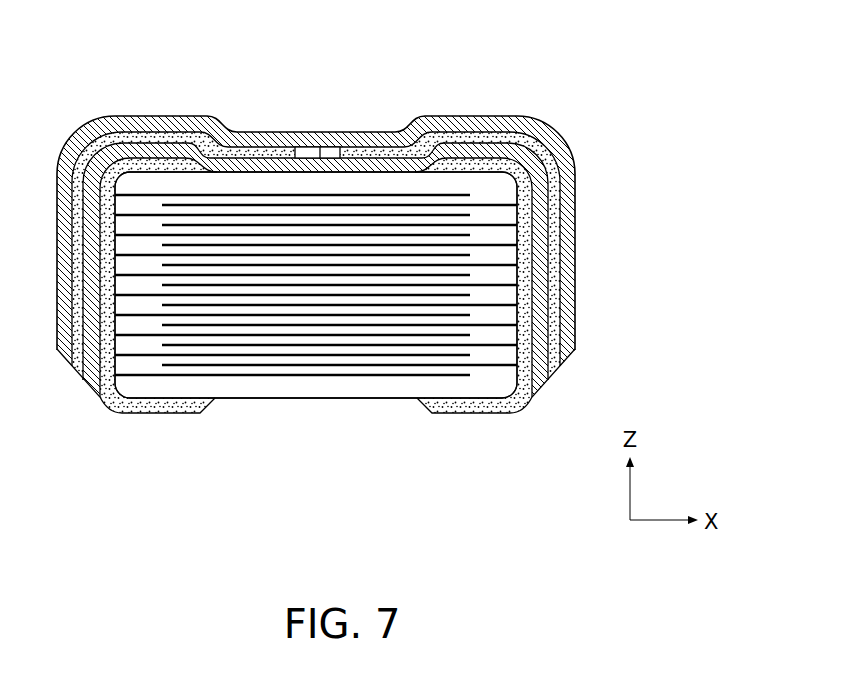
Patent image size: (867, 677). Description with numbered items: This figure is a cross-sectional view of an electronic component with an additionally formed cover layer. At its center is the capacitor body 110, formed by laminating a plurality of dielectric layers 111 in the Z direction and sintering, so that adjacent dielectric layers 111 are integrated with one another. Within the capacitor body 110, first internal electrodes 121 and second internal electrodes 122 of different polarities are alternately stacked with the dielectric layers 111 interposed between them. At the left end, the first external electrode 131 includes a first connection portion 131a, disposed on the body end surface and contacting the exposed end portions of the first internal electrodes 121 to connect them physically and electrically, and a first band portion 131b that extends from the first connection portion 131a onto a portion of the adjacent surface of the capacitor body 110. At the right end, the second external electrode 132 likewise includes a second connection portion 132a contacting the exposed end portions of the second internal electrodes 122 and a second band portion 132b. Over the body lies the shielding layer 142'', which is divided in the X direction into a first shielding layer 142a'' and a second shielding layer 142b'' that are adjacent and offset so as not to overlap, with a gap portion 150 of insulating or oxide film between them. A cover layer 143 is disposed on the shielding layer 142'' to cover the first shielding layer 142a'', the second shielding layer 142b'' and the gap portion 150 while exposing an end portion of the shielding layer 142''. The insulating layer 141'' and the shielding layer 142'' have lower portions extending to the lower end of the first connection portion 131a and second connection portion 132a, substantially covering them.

The capacitor body 110 is at (315, 400).
The dielectric layer 111 is at (512, 186).
The first internal electrode 121 is at (165, 195).
The second internal electrode 122 is at (230, 204).
The first external electrode 131 is at (48, 468).
The first connection portion 131a is at (83, 386).
The first band portion 131b is at (148, 406).
The second external electrode 132 is at (583, 468).
The second connection portion 132a is at (547, 396).
The second band portion 132b is at (482, 406).
The insulating layer 141'' is at (321, 242).
The shielding layer 142'' is at (329, 74).
The first shielding layer 142a'' is at (316, 97).
The second shielding layer 142b'' is at (328, 102).
The cover layer 143 is at (438, 165).
The gap portion 150 is at (321, 147).